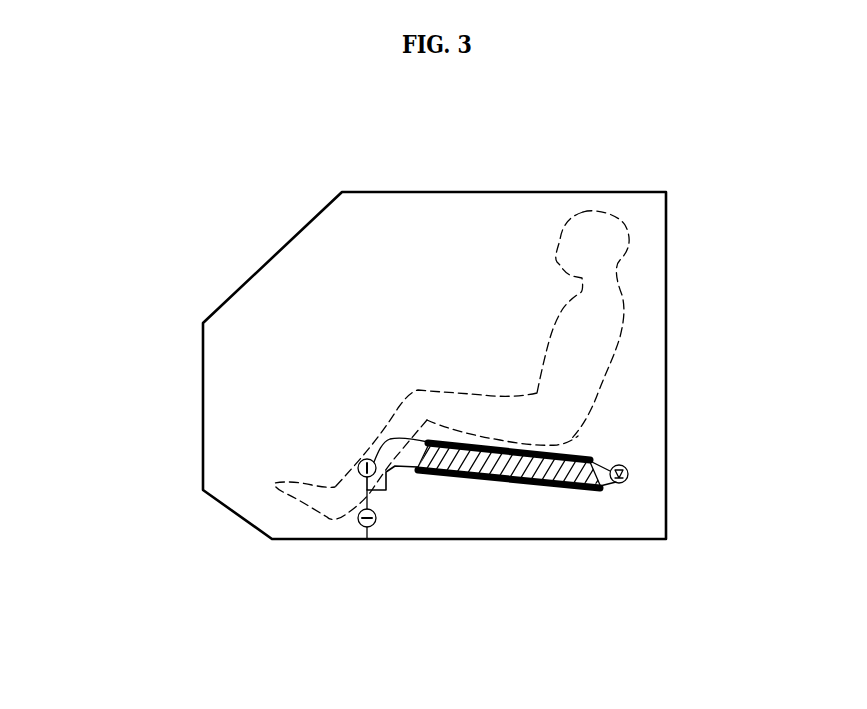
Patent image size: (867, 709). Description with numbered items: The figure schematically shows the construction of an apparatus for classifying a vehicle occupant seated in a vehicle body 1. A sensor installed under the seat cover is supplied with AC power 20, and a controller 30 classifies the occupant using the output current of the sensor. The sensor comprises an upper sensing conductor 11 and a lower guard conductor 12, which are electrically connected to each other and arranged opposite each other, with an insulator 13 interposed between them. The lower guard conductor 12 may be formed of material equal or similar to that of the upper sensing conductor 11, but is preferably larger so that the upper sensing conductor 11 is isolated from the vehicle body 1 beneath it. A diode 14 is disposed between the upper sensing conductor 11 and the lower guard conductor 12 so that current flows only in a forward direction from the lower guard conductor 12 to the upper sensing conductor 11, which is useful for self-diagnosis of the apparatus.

The vehicle body 1 is at (270, 260).
The upper sensing conductor 11 is at (577, 455).
The lower guard conductor 12 is at (500, 482).
The insulator 13 is at (619, 465).
The diode 14 is at (628, 474).
The AC power 20 is at (358, 465).
The controller 30 is at (363, 528).